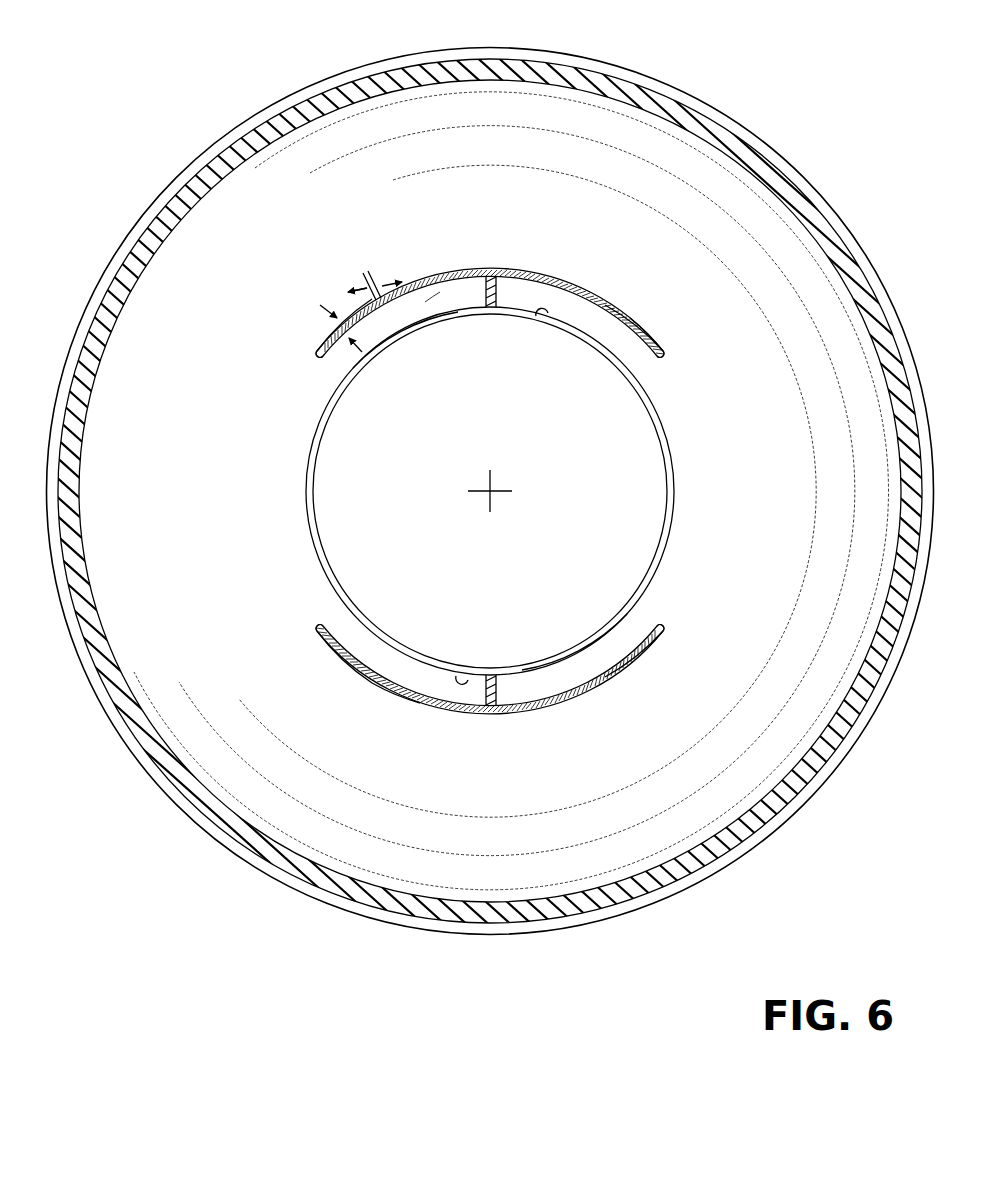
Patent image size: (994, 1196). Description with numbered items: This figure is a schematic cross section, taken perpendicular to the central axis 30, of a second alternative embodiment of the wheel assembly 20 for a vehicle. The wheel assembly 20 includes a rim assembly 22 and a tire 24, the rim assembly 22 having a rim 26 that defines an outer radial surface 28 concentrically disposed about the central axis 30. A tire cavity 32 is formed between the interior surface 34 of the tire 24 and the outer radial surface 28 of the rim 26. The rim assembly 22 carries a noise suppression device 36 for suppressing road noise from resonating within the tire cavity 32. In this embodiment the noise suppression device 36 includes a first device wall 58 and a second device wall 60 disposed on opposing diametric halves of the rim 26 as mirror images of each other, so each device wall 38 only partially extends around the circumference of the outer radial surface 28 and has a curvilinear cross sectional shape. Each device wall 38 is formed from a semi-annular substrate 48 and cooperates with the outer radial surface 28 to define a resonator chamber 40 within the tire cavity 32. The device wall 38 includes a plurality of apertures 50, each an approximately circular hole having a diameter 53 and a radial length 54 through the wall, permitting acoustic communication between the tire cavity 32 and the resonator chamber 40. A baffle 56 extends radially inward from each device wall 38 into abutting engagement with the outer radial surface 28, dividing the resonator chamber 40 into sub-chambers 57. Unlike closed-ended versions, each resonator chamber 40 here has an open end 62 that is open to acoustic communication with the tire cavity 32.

The wheel assembly 20 is at (670, 67).
The rim assembly 22 is at (421, 344).
The tire 24 is at (510, 68).
The rim 26 is at (669, 520).
The outer radial surface 28 is at (541, 322).
The central axis 30 is at (500, 497).
The tire cavity 32 is at (233, 310).
The interior surface 34 is at (326, 118).
The noise suppression device 36 is at (548, 274).
The device wall 38 is at (563, 273).
The resonator chamber 40 is at (490, 487).
The substrate 48 is at (468, 268).
The apertures 50 is at (354, 306).
The diameter 53 is at (393, 282).
The radial length 54 is at (325, 312).
The baffle 56 is at (492, 270).
The sub-chambers 57 is at (425, 302).
The first device wall 58 is at (648, 326).
The second device wall 60 is at (420, 702).
The open end 62 is at (317, 353).